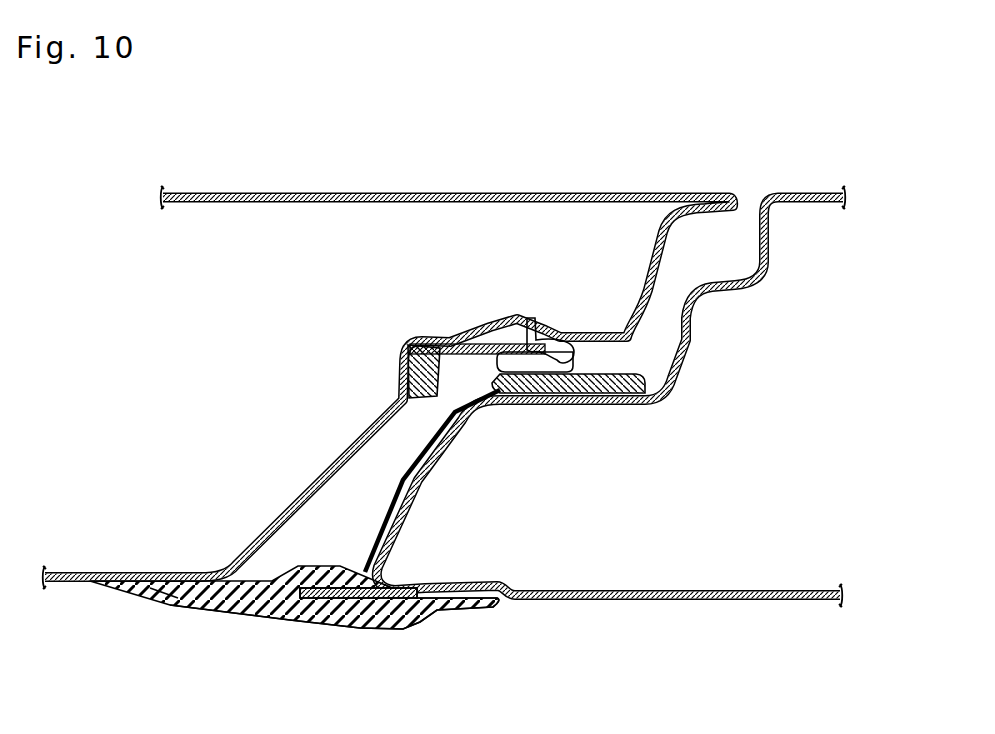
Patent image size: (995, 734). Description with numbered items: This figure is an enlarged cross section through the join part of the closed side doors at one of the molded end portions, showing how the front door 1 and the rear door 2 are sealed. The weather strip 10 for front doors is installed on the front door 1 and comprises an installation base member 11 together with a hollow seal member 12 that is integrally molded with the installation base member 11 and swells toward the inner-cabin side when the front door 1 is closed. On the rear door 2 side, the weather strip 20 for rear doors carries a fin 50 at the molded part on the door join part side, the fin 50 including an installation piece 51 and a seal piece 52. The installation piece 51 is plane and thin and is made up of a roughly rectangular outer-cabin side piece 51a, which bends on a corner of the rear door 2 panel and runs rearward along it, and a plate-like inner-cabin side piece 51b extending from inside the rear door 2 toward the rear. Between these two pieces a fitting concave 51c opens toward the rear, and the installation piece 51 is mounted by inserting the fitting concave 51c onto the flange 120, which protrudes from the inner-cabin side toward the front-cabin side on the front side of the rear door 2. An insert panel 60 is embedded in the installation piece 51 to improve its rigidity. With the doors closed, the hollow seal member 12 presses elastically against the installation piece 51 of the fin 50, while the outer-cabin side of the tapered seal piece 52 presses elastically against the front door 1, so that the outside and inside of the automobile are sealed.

The front door 1 is at (400, 186).
The rear door 2 is at (637, 604).
The weather strip for front doors 10 is at (590, 356).
The installation base member 11 is at (406, 380).
The hollow seal member 12 is at (577, 370).
The weather strip for rear doors 20 is at (236, 621).
The fin 50 is at (195, 614).
The installation piece 51 is at (388, 522).
The outer-cabin side piece 51a is at (405, 482).
The inner-cabin side piece 51b is at (422, 616).
The fitting concave 51c is at (337, 578).
The seal piece 52 is at (178, 597).
The insert panel 60 is at (440, 442).
The flange 120 is at (327, 595).